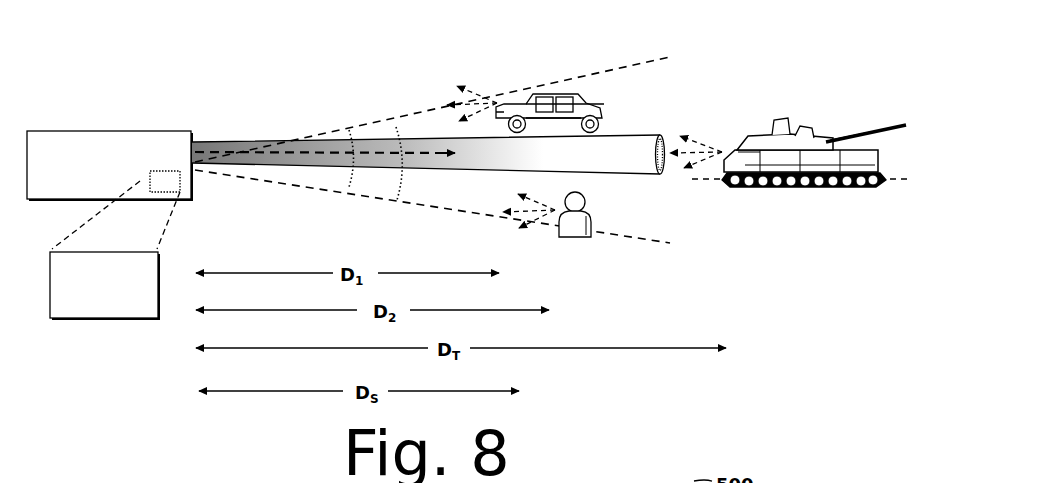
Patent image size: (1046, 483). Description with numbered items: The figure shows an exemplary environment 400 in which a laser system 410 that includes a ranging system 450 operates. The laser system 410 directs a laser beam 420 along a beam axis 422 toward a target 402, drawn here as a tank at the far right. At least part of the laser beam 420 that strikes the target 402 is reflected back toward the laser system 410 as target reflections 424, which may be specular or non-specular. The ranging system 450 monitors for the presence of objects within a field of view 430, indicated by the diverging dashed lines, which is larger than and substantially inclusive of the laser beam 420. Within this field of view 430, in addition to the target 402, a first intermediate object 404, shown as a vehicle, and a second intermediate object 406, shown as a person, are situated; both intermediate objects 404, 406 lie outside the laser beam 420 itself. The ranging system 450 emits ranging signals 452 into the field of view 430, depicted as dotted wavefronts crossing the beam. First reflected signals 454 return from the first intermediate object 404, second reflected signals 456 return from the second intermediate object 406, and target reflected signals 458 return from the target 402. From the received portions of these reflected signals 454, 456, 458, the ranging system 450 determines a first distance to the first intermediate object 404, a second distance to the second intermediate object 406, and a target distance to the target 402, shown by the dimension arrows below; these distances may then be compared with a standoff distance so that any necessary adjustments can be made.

The environment 400 is at (152, 52).
The target 402 is at (798, 126).
The first intermediate object 404 is at (552, 93).
The second intermediate object 406 is at (585, 233).
The laser system 410 is at (110, 166).
The laser beam 420 is at (242, 141).
The beam axis 422 is at (315, 150).
The target reflections 424 is at (709, 115).
The field of view 430 is at (433, 208).
The ranging system 450 is at (115, 245).
The ranging signals 452 is at (398, 185).
The first reflected signals 454 is at (484, 68).
The second reflected signals 456 is at (529, 251).
The target reflected signals 458 is at (704, 196).